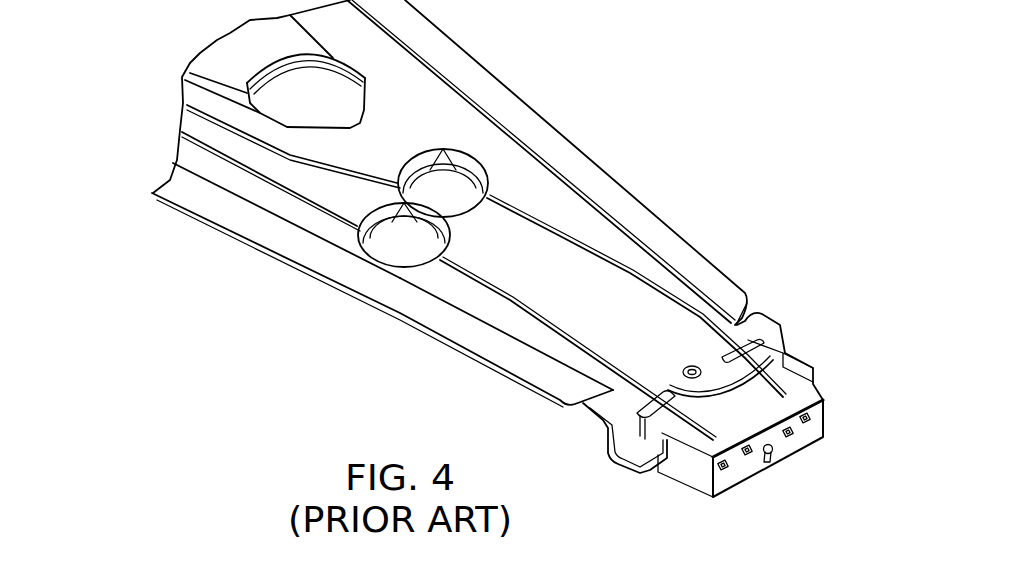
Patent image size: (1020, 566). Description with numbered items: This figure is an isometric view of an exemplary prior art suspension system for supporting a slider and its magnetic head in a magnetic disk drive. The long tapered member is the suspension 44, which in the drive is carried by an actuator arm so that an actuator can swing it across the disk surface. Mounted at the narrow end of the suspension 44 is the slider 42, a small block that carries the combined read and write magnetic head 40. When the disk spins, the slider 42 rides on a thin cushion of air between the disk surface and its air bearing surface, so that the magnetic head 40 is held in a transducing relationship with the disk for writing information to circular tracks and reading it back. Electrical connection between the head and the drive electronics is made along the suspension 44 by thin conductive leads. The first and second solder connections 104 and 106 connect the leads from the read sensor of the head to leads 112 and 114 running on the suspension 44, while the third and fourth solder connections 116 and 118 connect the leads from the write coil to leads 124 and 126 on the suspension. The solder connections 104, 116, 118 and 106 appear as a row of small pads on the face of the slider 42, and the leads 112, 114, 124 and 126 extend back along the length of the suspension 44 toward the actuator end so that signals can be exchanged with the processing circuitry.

The suspension 44 is at (603, 157).
The lead 114 is at (650, 283).
The lead 126 is at (563, 237).
The lead 124 is at (497, 297).
The lead 112 is at (483, 289).
The slider 42 is at (655, 479).
The first solder connection 104 is at (720, 472).
The third solder connection 116 is at (746, 460).
The fourth solder connection 118 is at (795, 435).
The second solder connection 106 is at (816, 414).
The magnetic head 40 is at (768, 456).